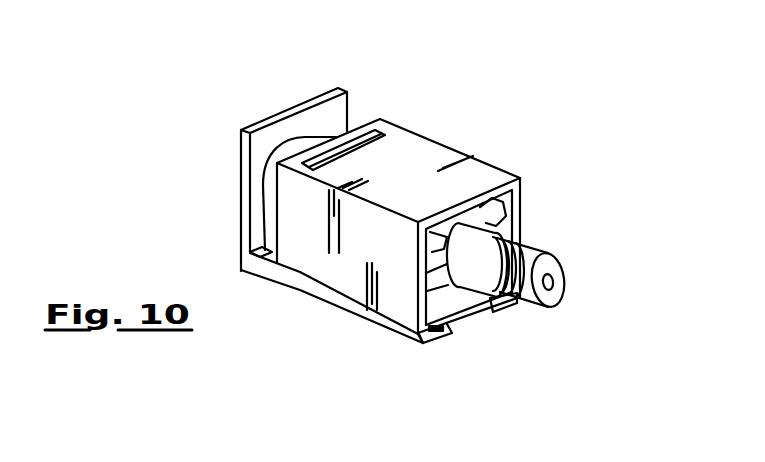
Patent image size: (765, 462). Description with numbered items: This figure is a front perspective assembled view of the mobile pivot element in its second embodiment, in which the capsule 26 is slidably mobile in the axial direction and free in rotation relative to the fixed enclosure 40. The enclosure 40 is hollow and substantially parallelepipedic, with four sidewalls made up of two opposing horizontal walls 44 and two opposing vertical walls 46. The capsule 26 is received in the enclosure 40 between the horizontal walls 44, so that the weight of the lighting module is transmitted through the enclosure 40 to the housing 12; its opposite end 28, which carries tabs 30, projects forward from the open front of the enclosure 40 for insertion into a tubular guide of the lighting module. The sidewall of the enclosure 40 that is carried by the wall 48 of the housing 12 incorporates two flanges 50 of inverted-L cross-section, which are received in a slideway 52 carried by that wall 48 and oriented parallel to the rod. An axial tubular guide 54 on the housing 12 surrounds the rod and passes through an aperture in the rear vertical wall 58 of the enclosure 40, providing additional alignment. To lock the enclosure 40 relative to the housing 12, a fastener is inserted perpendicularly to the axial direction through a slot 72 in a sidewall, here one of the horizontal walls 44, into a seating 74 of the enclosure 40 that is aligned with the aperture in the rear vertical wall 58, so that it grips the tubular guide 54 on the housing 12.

The housing 12 is at (356, 94).
The capsule 26 is at (523, 198).
The opposite end 28 is at (527, 292).
The tabs 30 is at (543, 232).
The enclosure 40 is at (430, 166).
The horizontal walls 44 is at (500, 218).
The vertical walls 46 is at (353, 267).
The wall 48 is at (250, 244).
The flanges 50 is at (440, 327).
The slideway 52 is at (252, 271).
The axial tubular guide 54 is at (298, 145).
The rear vertical wall 58 is at (258, 247).
The slot 72 is at (365, 118).
The seating 74 is at (330, 150).